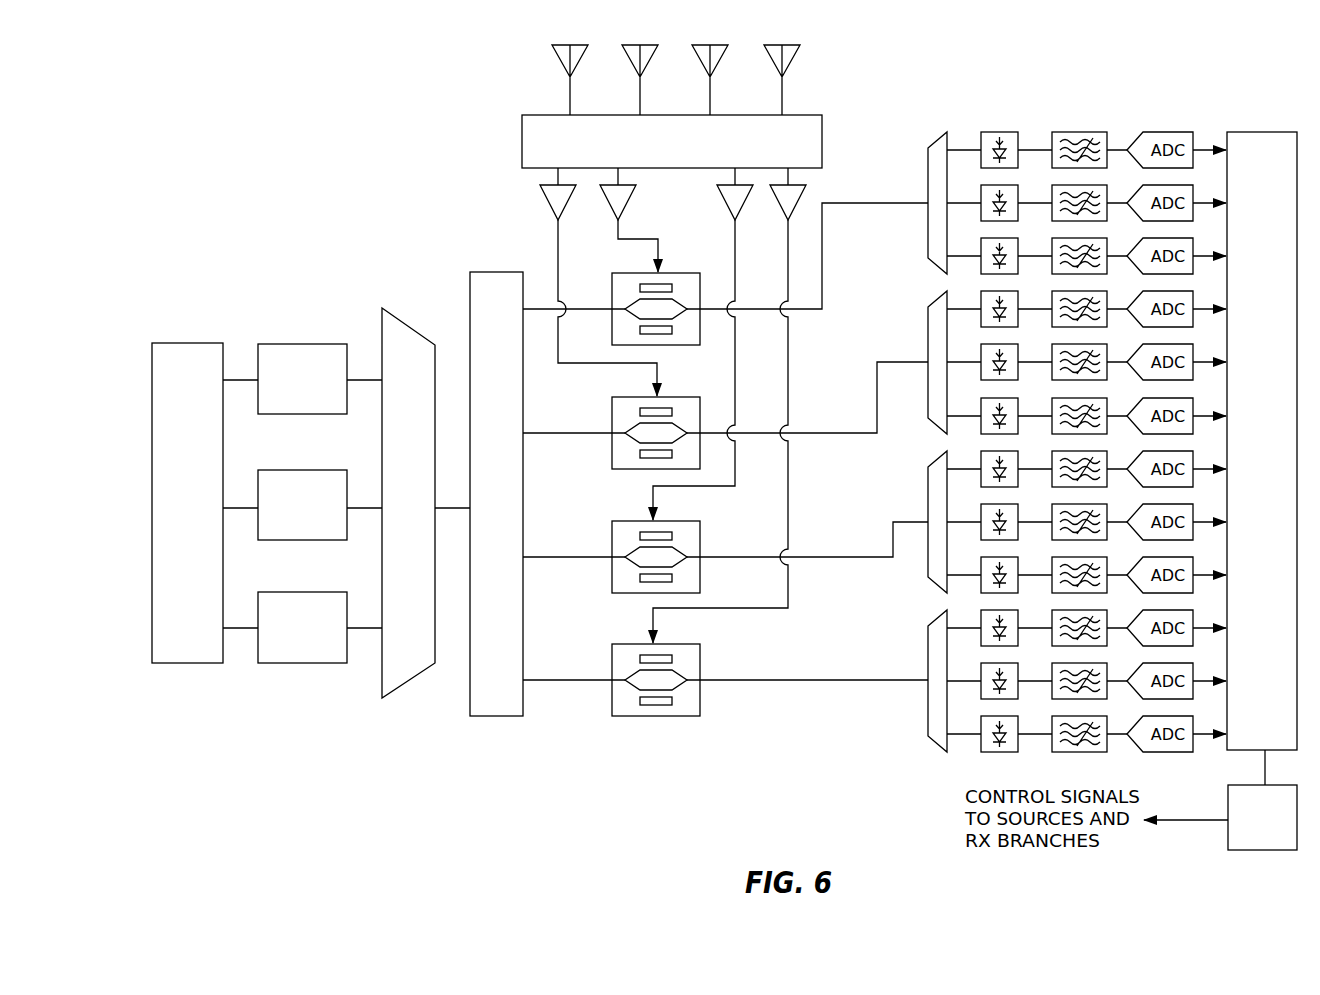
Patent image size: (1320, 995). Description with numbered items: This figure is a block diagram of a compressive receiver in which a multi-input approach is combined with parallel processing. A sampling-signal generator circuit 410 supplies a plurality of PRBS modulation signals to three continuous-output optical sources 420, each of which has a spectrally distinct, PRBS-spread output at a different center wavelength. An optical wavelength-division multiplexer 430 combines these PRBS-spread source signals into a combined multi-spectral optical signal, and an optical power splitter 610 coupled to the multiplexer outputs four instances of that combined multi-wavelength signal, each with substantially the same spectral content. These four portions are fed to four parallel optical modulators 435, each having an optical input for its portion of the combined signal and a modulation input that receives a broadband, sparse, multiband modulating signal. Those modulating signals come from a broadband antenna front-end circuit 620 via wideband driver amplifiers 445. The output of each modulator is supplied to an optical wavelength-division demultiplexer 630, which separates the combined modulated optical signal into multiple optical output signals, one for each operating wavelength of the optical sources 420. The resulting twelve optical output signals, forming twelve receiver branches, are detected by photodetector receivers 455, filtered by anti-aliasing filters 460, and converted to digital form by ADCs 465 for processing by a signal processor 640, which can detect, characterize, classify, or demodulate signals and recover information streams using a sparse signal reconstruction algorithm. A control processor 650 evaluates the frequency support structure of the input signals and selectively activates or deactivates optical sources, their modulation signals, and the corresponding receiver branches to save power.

The sampling-signal generator circuit 410 is at (205, 503).
The continuous-output optical sources 420 is at (320, 503).
The optical wavelength-division multiplexer 430 is at (426, 503).
The optical power splitter 610 is at (496, 494).
The broadband antenna front-end circuit 620 is at (672, 141).
The wideband driver amplifiers 445 is at (537, 210).
The optical modulators 435 is at (663, 345).
The optical wavelength-division demultiplexer 630 is at (926, 168).
The photodetector receivers 455 is at (1002, 108).
The anti-aliasing filters 460 is at (1090, 108).
The ADCs 465 is at (1177, 108).
The signal processor 640 is at (1262, 441).
The control processor 650 is at (1220, 800).